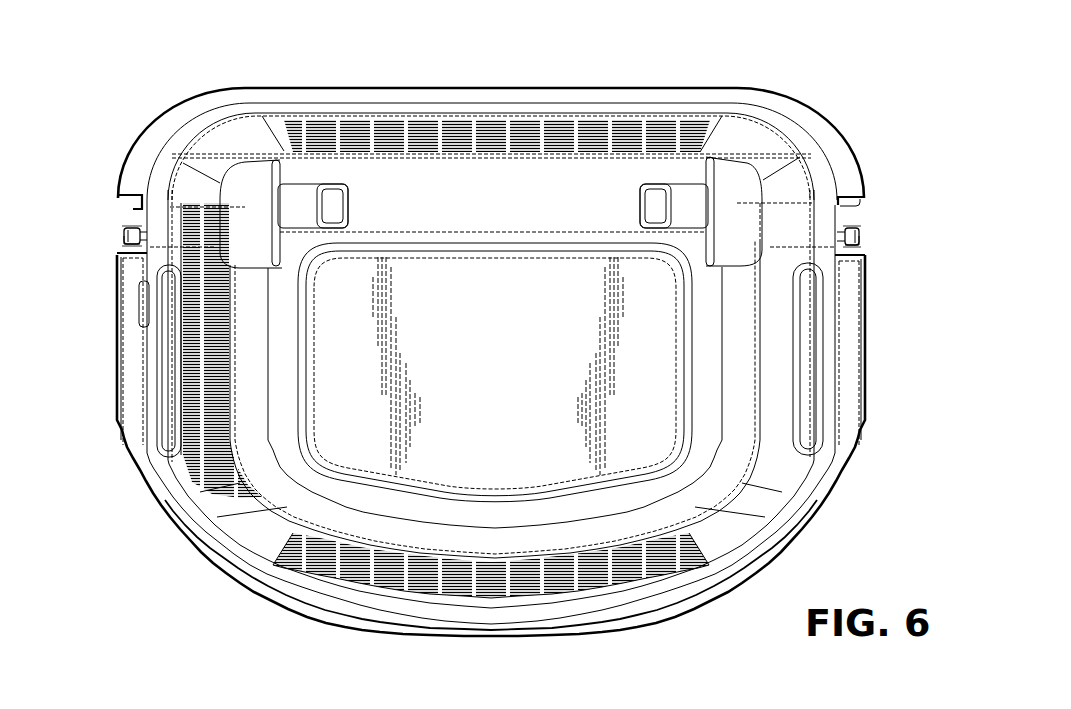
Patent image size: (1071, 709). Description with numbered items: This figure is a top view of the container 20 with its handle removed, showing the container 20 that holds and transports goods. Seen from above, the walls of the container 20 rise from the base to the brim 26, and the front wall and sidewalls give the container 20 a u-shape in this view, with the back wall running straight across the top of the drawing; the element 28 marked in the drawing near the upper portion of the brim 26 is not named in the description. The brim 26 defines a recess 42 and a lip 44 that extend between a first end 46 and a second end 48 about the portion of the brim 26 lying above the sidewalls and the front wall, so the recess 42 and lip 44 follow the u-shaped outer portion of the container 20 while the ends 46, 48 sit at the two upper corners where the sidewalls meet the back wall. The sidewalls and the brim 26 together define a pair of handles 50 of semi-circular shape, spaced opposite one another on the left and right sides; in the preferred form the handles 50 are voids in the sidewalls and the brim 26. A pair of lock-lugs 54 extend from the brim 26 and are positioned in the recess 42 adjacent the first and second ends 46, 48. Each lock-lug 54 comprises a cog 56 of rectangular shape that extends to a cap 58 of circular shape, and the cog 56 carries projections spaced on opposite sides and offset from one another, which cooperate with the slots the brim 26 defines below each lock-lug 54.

The container 20 is at (133, 578).
The brim 26 is at (814, 118).
The tray 28 is at (750, 135).
The recess 42 is at (862, 204).
The lip 44 is at (845, 456).
The first end 46 is at (120, 193).
The second end 48 is at (846, 200).
The handles 50 is at (176, 316).
The lock-lugs 54 is at (116, 240).
The cog 56 is at (128, 228).
The cap 58 is at (126, 232).